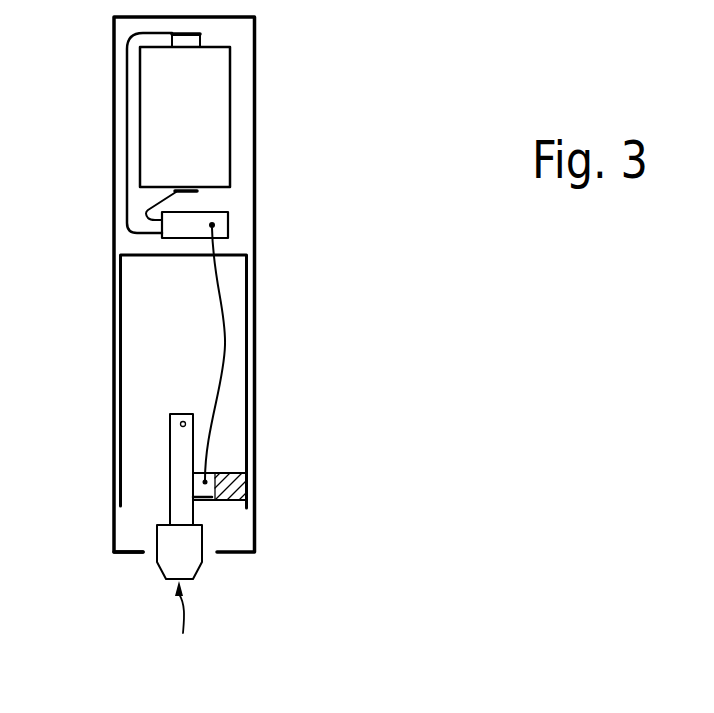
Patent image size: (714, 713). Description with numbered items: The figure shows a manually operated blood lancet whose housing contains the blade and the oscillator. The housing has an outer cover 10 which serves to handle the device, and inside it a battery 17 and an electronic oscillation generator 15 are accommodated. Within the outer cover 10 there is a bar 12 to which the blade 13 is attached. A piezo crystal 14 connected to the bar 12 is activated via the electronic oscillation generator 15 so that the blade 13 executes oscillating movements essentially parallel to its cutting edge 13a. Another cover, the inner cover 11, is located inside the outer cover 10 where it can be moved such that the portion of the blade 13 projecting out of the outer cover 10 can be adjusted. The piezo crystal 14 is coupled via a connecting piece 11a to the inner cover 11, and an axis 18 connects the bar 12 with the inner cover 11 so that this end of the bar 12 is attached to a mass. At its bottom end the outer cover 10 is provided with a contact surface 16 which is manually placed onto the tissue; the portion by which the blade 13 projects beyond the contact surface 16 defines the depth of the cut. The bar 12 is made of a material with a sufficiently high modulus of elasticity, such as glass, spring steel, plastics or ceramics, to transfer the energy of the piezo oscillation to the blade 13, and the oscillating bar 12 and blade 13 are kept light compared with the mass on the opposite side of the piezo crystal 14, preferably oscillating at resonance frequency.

The outer cover 10 is at (256, 75).
The inner cover 11 is at (233, 256).
The connecting piece 11a is at (237, 463).
The bar 12 is at (180, 460).
The blade 13 is at (192, 562).
The cutting edge 13a is at (192, 626).
The piezo crystal 14 is at (197, 502).
The electronic oscillation generator 15 is at (193, 222).
The contact surface 16 is at (133, 553).
The battery 17 is at (208, 157).
The axis 18 is at (181, 424).